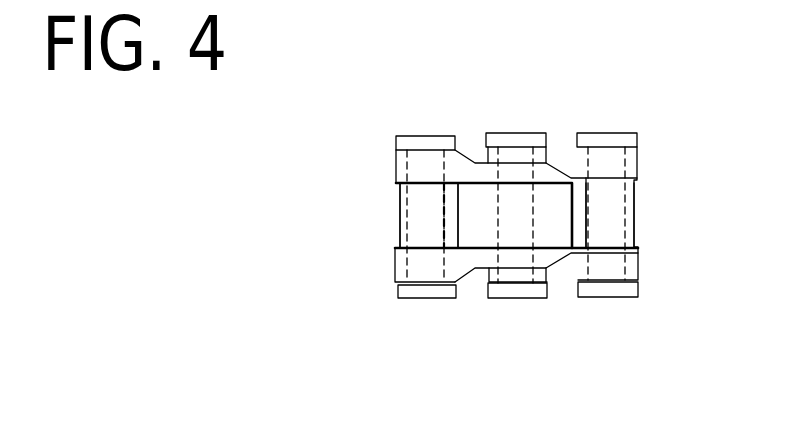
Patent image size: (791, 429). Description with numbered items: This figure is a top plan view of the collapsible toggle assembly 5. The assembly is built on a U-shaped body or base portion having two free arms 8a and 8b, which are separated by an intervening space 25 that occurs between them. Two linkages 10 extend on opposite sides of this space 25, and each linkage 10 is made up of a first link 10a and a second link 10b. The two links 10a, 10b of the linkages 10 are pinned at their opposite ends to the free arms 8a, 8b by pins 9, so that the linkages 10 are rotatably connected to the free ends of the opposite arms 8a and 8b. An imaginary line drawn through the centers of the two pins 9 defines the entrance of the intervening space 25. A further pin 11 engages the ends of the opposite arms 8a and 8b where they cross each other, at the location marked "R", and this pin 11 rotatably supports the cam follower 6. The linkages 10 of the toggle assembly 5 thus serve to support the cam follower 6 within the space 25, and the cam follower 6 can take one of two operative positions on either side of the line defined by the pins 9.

The collapsible toggle assembly 5 is at (568, 301).
The cam follower 6 is at (556, 205).
The free arm 8a is at (635, 208).
The free arm 8b is at (400, 217).
The pin 9 is at (613, 132).
The linkage 10 is at (457, 128).
The first link 10a is at (638, 158).
The second link 10b is at (396, 158).
The pin 11 is at (509, 301).
The intervening space 25 is at (452, 205).
The crossing location R is at (520, 132).